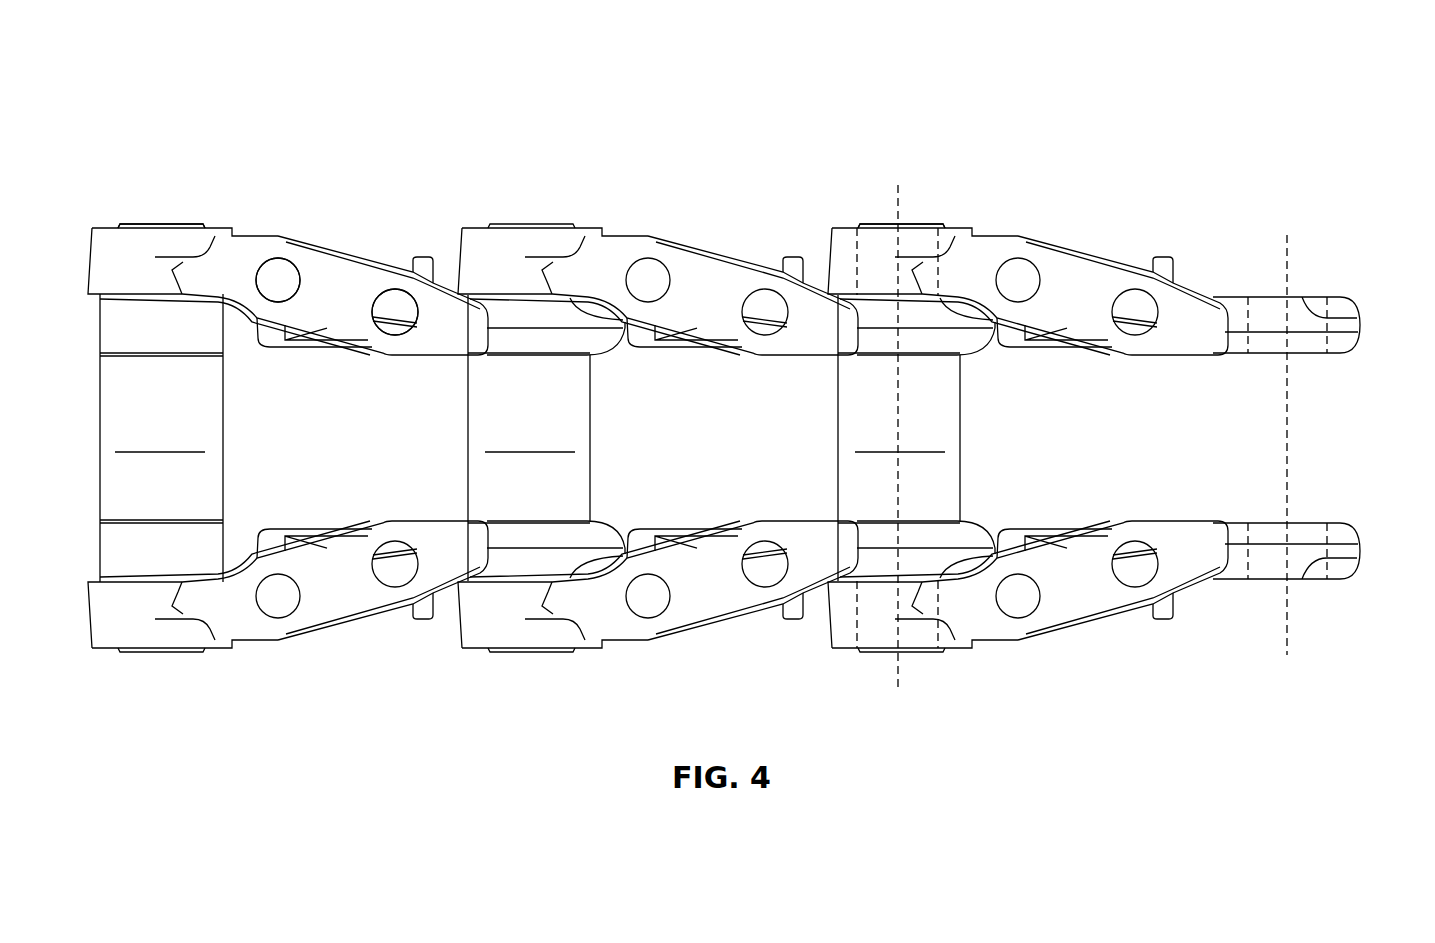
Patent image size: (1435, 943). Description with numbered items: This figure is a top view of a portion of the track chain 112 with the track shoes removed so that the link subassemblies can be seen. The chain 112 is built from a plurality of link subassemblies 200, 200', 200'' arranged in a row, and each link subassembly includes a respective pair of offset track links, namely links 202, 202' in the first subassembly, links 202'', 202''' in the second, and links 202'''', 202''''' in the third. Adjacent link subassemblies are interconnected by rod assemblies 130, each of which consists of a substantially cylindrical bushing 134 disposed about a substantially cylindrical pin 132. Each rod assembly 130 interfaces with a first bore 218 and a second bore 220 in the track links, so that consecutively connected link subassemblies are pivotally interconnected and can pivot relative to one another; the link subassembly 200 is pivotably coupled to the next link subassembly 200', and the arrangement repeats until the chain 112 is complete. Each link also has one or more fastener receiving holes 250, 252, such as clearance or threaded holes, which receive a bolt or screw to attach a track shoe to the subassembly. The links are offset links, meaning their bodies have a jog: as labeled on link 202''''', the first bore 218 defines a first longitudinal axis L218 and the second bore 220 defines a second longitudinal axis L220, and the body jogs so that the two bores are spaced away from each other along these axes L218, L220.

The chain 112 is at (181, 111).
The pin 132 is at (157, 223).
The fastener receiving hole 252 is at (277, 255).
The fastener receiving hole 250 is at (387, 328).
The rod assembly 130 is at (161, 438).
The bushing 134 is at (161, 438).
The link subassembly 200 is at (174, 433).
The link subassembly 200' is at (543, 431).
The link subassembly 200'' is at (919, 426).
The offset track link 202 is at (294, 586).
The offset track link 202' is at (294, 300).
The offset track link 202'' is at (664, 594).
The offset track link 202''' is at (664, 285).
The offset track link 202'''' is at (1034, 594).
The offset track link 202''''' is at (1034, 268).
The second bore 220 is at (940, 232).
The second longitudinal axis L220 is at (900, 208).
The first bore 218 is at (1330, 318).
The first longitudinal axis L218 is at (1287, 280).